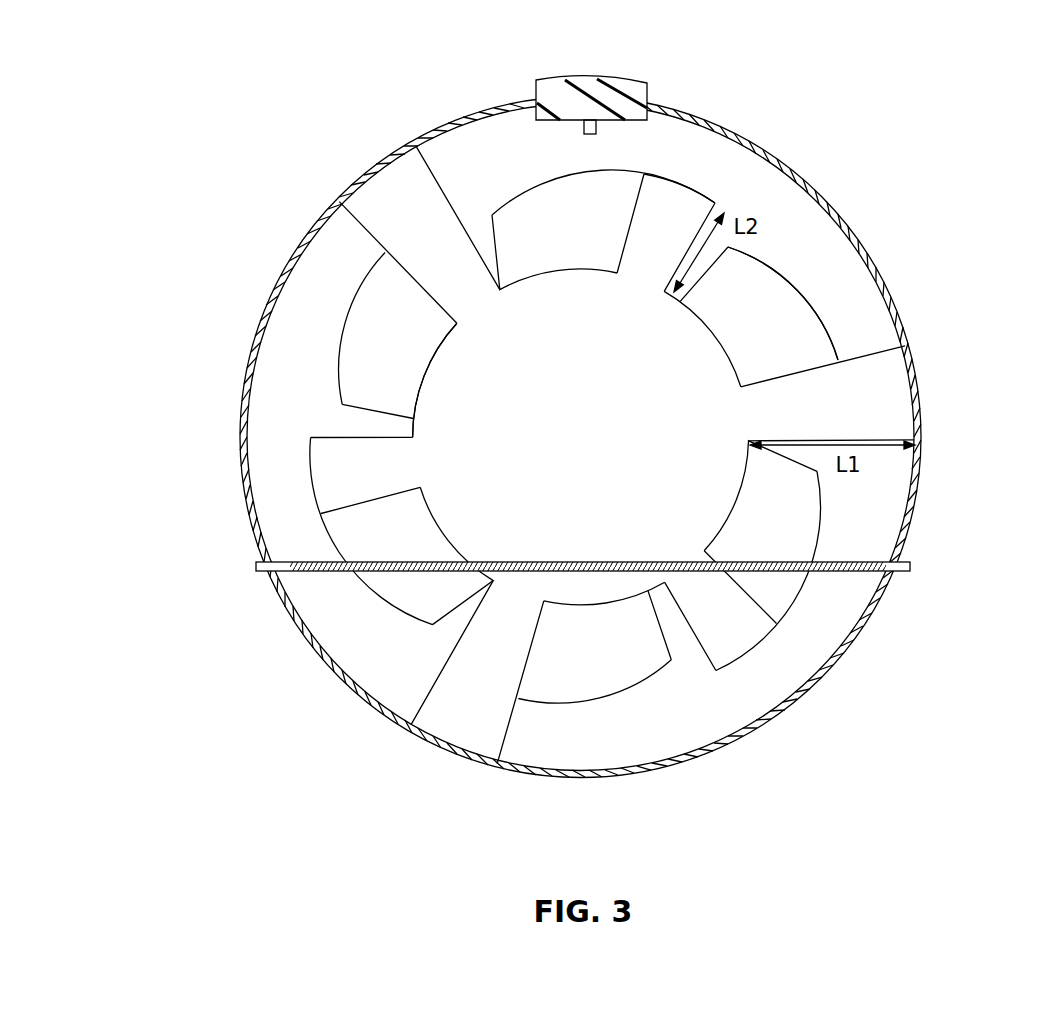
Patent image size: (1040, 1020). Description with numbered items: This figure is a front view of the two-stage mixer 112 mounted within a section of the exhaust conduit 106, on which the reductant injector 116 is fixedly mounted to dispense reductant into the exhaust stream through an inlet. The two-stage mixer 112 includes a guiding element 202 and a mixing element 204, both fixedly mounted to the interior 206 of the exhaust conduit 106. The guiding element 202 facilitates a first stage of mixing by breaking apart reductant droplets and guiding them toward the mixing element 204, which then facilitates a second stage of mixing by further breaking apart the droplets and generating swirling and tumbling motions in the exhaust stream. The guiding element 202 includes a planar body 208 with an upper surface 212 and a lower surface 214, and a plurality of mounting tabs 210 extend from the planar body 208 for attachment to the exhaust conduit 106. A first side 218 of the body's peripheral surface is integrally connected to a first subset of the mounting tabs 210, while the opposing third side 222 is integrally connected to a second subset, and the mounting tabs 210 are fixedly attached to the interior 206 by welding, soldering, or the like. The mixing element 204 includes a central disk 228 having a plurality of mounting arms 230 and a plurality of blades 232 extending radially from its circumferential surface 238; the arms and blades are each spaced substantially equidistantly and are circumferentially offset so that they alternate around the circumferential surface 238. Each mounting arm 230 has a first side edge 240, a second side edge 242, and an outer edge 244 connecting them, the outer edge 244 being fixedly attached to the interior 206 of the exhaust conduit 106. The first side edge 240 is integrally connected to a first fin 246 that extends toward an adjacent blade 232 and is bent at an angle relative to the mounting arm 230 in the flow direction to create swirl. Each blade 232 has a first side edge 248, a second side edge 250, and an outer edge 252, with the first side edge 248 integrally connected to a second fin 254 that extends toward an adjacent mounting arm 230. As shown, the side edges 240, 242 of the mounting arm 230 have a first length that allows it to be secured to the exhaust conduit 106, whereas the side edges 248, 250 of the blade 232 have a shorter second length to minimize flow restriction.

The exhaust conduit 106 is at (827, 677).
The two-stage mixer 112 is at (275, 88).
The reductant injector 116 is at (596, 79).
The guiding element 202 is at (617, 560).
The mixing element 204 is at (923, 433).
The interior 206 is at (257, 362).
The planar body 208 is at (515, 560).
The mounting tabs 210 is at (257, 565).
The upper surface 212 is at (308, 561).
The lower surface 214 is at (345, 572).
The first side 218 is at (276, 593).
The third side 222 is at (908, 578).
The central disk 228 is at (557, 439).
The mounting arms 230 is at (383, 222).
The blades 232 is at (649, 249).
The circumferential surface 238 is at (422, 393).
The first side edge 240 is at (840, 358).
The second side edge 242 is at (746, 438).
The outer edge 244 is at (923, 371).
The first fin 246 is at (738, 329).
The first side edge 248 is at (634, 211).
The second side edge 250 is at (667, 285).
The outer edge 252 is at (683, 185).
The second fin 254 is at (539, 255).